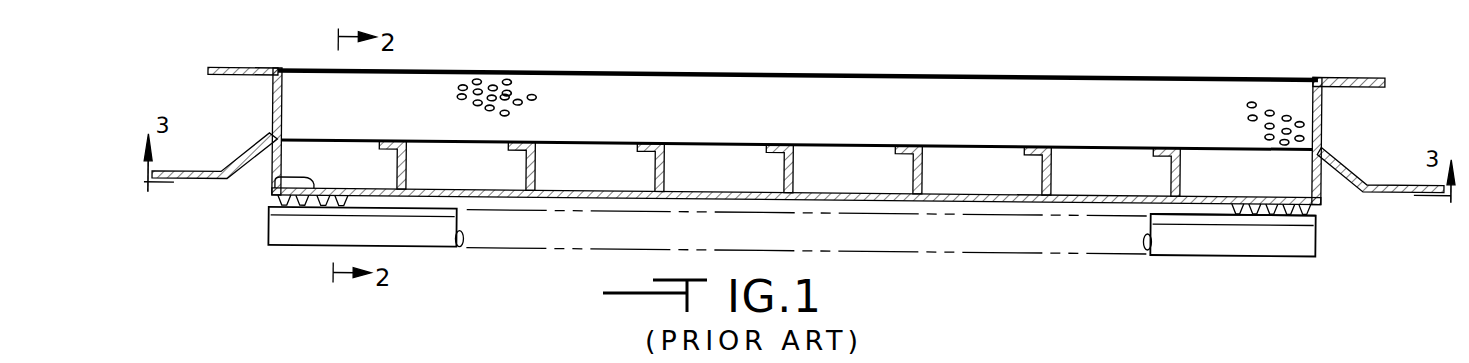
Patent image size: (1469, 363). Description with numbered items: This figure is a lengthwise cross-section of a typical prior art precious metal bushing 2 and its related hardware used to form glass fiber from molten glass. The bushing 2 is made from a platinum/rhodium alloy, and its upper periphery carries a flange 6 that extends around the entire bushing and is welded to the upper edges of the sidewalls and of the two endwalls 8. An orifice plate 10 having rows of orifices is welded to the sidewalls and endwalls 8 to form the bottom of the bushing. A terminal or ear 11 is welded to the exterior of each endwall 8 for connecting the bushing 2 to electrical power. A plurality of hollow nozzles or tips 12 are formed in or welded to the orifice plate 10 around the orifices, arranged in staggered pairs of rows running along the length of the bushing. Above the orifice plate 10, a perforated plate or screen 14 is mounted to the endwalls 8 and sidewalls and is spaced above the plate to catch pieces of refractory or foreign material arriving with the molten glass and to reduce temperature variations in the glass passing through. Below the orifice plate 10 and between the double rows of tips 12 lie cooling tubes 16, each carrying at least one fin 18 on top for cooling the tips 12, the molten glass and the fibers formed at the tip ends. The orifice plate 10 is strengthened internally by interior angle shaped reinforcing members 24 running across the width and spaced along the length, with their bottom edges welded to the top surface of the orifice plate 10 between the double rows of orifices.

The bushing 2 is at (1013, 60).
The flange 6 is at (238, 68).
The endwall 8 is at (273, 108).
The orifice plate 10 is at (274, 184).
The terminal or ear 11 is at (191, 185).
The hollow nozzles or tips 12 is at (1314, 200).
The perforated plate or screen 14 is at (547, 97).
The cooling tubes 16 is at (1286, 236).
The fin 18 is at (1317, 208).
The interior angle shaped reinforcing members 24 is at (800, 164).